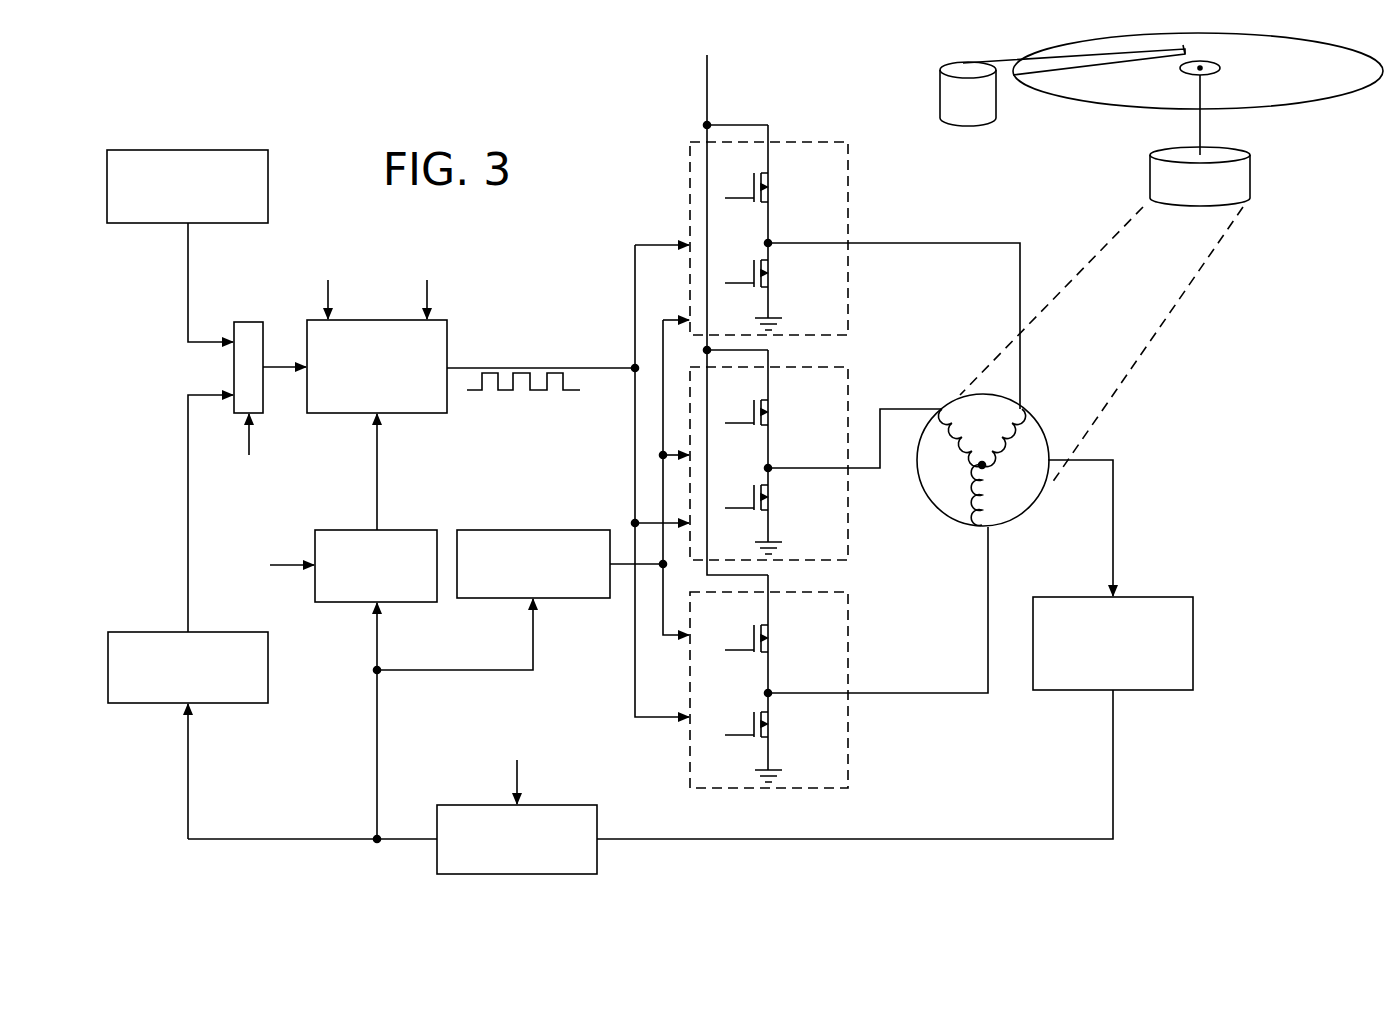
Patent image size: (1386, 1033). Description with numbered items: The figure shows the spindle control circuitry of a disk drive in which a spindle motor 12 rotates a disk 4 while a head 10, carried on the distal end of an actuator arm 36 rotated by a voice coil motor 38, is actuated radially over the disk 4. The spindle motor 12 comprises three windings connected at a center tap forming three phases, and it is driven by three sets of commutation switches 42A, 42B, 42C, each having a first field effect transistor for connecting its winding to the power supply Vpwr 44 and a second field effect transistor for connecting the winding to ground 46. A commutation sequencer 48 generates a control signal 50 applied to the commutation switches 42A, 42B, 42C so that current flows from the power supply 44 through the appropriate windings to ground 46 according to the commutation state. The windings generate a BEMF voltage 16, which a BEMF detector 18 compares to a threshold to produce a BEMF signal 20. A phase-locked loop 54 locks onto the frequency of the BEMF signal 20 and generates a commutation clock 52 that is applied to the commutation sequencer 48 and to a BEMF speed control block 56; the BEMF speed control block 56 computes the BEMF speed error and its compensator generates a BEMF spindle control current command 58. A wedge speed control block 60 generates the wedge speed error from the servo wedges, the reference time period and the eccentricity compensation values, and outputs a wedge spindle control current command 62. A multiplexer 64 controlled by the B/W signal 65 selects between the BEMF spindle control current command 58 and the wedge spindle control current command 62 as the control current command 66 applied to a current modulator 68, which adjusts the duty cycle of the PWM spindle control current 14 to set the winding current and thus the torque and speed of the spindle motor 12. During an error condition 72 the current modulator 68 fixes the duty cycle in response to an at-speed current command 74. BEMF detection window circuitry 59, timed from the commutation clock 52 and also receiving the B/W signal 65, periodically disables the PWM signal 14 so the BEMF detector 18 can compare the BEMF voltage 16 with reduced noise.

The disk 4 is at (1355, 50).
The head 10 is at (1185, 44).
The spindle motor 12 is at (1010, 525).
The spindle control current (PWM signal) 14 is at (505, 366).
The BEMF voltage 16 is at (1113, 548).
The BEMF detector 18 is at (1053, 690).
The BEMF signal 20 is at (1113, 725).
The actuator arm 36 is at (999, 61).
The voice coil motor 38 is at (963, 61).
The commutation switches 42A is at (855, 262).
The commutation switches 42B is at (793, 367).
The commutation switches 42C is at (793, 592).
The power supply Vpwr 44 is at (707, 70).
The ground 46 is at (772, 302).
The commutation sequencer 48 is at (538, 530).
The control signal 50 is at (623, 572).
The commutation clock 52 is at (377, 733).
The phase-locked loop 54 is at (467, 805).
The BEMF speed control block 56 is at (268, 667).
The BEMF spindle control current command 58 is at (188, 510).
The BEMF detection window circuitry 59 is at (330, 530).
The wedge speed control block 60 is at (188, 148).
The wedge spindle control current command 62 is at (188, 278).
The multiplexer 64 is at (249, 322).
The B/W signal 65 is at (249, 441).
The control current command 66 is at (280, 365).
The current modulator 68 is at (427, 413).
The error condition 72 is at (427, 292).
The at-speed current command 74 is at (328, 293).